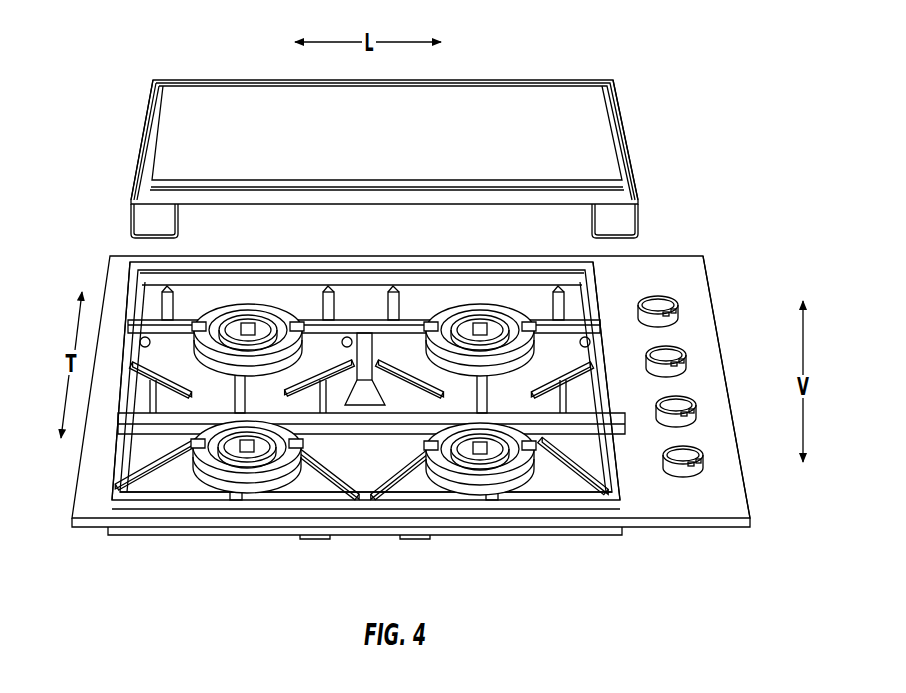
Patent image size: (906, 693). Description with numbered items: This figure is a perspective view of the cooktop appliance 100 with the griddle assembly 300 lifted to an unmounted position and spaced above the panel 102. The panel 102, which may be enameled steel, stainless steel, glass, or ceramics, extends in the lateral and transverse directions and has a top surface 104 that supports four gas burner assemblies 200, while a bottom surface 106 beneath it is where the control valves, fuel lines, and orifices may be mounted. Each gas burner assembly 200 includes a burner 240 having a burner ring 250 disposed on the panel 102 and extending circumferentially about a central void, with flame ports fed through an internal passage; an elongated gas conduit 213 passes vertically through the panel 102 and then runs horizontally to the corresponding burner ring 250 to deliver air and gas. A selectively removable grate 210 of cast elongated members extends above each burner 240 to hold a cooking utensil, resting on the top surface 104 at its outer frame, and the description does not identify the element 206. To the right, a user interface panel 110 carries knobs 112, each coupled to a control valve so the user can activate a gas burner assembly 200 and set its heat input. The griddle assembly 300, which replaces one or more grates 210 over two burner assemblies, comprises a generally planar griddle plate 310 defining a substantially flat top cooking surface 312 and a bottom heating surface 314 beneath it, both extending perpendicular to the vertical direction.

The cooktop appliance 100 is at (411, 323).
The panel 102 is at (545, 487).
The top surface 104 is at (172, 487).
The bottom surface 106 is at (414, 492).
The user interface panel 110 is at (710, 355).
The knobs 112 is at (686, 352).
The gas burner assembly 200 is at (364, 407).
The grate front rail 206 is at (118, 512).
The grate 210 is at (120, 497).
The elongated gas conduit 213 is at (157, 320).
The burner 240 is at (257, 312).
The burner ring 250 is at (214, 348).
The griddle assembly 300 is at (415, 133).
The griddle plate 310 is at (513, 105).
The top cooking surface 312 is at (236, 104).
The bottom heating surface 314 is at (437, 160).